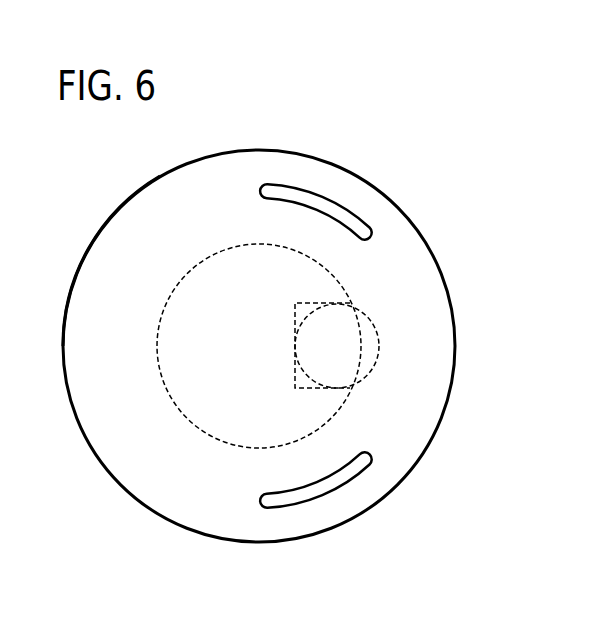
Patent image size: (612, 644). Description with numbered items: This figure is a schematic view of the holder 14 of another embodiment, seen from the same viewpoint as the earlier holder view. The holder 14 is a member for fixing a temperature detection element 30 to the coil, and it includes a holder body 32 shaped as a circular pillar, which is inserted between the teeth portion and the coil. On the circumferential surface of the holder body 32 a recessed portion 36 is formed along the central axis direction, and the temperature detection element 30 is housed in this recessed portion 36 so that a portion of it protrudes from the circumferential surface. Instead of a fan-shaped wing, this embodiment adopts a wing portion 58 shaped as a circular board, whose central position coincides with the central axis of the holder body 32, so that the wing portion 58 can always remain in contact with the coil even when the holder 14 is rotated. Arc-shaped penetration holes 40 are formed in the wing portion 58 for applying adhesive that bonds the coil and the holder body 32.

The holder 14 is at (429, 167).
The wing portion 58 is at (113, 243).
The penetration hole 40 is at (312, 200).
The recessed portion 36 is at (302, 304).
The temperature detection element 30 is at (372, 340).
The holder body 32 is at (330, 398).